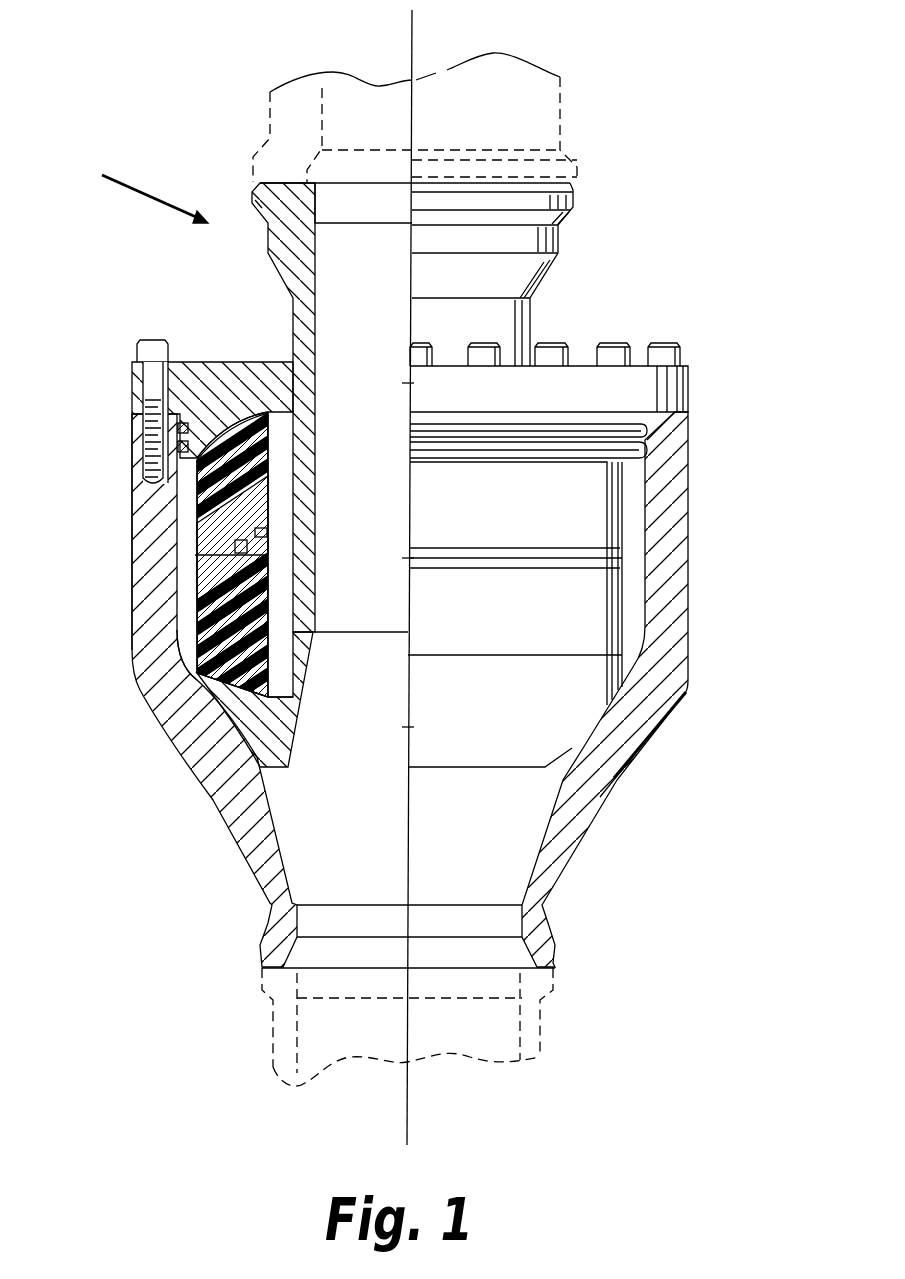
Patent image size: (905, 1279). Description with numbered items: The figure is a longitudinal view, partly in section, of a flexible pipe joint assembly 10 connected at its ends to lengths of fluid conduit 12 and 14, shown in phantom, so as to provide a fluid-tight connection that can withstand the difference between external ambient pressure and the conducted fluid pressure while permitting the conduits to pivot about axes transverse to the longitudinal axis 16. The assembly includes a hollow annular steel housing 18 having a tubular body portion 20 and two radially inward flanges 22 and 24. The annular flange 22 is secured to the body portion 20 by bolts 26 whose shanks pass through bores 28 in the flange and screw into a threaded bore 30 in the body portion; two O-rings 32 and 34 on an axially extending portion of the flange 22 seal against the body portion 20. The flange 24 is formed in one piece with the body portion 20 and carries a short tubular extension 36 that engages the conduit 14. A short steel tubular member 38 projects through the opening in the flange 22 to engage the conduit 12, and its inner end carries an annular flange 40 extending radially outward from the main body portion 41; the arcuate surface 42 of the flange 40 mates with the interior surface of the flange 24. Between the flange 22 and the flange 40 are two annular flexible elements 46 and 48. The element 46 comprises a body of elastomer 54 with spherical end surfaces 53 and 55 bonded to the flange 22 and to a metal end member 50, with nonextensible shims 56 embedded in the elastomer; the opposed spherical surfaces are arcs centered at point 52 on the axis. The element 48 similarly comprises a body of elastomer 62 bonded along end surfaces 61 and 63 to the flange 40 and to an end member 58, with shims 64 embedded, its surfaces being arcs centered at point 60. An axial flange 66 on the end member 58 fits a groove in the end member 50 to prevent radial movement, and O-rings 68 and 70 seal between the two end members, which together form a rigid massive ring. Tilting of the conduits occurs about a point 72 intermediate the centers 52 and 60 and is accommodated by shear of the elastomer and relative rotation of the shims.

The flexible pipe joint assembly 10 is at (137, 191).
The fluid conduit 12 is at (562, 97).
The fluid conduit 14 is at (540, 1033).
The longitudinal axis 16 is at (415, 52).
The hollow annular housing 18 is at (668, 737).
The tubular body portion 20 is at (677, 510).
The flange 22 is at (227, 409).
The flange 24 is at (583, 803).
The bolts 26 is at (153, 340).
The bores 28 is at (147, 388).
The threaded bore 30 is at (150, 472).
The O-ring 32 is at (558, 428).
The O-ring 34 is at (523, 448).
The tubular extension 36 is at (542, 927).
The tubular member 38 is at (556, 280).
The annular flange 40 is at (270, 736).
The main body portion 41 is at (305, 325).
The surface 42 is at (197, 740).
The flexible element 46 is at (466, 525).
The flexible element 48 is at (524, 623).
The end member 50 is at (250, 541).
The point 52 is at (404, 727).
The end surface 53 is at (250, 430).
The body of elastomer 54 is at (268, 447).
The end surface 55 is at (268, 497).
The shims 56 is at (197, 507).
The end member 58 is at (253, 585).
The point 60 is at (404, 383).
The end surface 61 is at (195, 694).
The body of elastomer 62 is at (265, 650).
The end surface 63 is at (242, 602).
The shims 64 is at (197, 632).
The annular flange 66 is at (266, 562).
The O-ring 68 is at (197, 557).
The O-ring 70 is at (268, 530).
The point 72 is at (404, 558).